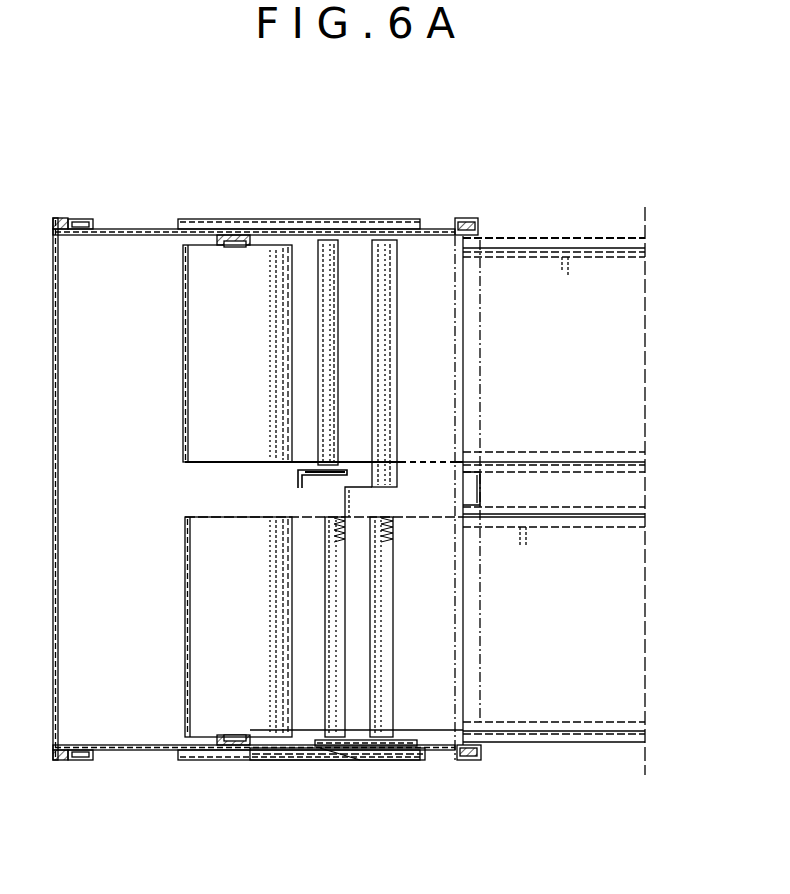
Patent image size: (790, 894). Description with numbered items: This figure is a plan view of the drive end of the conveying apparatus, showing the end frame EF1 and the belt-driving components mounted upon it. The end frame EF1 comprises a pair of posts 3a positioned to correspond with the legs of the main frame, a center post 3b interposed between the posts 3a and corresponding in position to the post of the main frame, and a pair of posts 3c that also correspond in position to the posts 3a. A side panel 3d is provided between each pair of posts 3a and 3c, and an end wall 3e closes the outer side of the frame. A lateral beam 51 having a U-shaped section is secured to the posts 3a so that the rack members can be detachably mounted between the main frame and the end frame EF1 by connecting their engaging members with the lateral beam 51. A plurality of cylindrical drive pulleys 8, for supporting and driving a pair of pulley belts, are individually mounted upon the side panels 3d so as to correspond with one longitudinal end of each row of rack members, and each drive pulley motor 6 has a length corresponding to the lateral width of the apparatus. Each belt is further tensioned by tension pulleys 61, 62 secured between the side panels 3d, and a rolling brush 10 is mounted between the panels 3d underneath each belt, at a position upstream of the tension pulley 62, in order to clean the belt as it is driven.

The post 3a is at (475, 218).
The center post 3b is at (470, 482).
The post 3c is at (84, 219).
The side panel 3d is at (163, 229).
The end wall 3e is at (54, 245).
The drive pulley motor 6 is at (207, 255).
The drive pulley 8 is at (185, 366).
The rolling brush 10 is at (390, 735).
The lateral beam 51 is at (482, 686).
The tension pulley 61 is at (322, 260).
The tension pulley 62 is at (395, 262).
The end frame EF1 is at (130, 195).